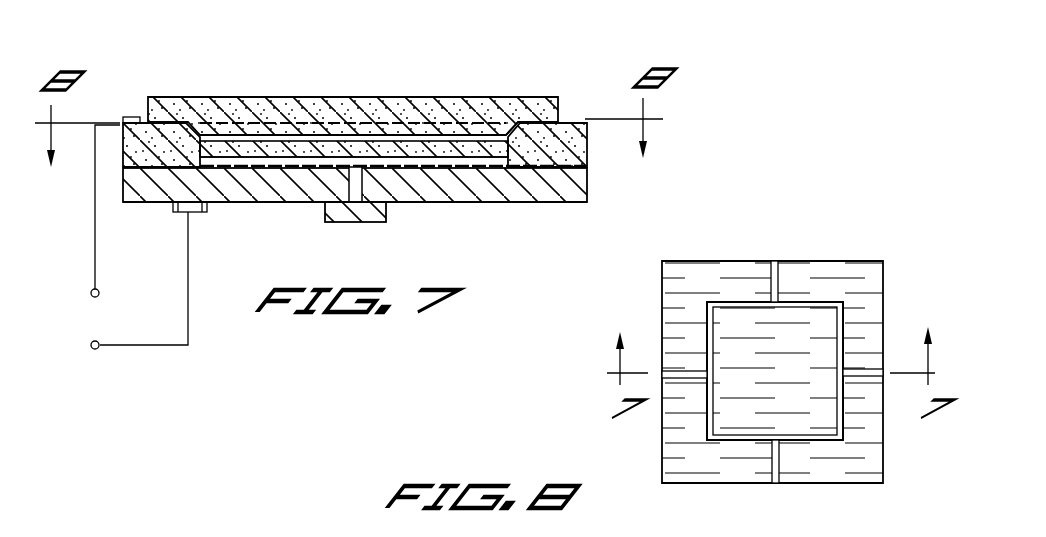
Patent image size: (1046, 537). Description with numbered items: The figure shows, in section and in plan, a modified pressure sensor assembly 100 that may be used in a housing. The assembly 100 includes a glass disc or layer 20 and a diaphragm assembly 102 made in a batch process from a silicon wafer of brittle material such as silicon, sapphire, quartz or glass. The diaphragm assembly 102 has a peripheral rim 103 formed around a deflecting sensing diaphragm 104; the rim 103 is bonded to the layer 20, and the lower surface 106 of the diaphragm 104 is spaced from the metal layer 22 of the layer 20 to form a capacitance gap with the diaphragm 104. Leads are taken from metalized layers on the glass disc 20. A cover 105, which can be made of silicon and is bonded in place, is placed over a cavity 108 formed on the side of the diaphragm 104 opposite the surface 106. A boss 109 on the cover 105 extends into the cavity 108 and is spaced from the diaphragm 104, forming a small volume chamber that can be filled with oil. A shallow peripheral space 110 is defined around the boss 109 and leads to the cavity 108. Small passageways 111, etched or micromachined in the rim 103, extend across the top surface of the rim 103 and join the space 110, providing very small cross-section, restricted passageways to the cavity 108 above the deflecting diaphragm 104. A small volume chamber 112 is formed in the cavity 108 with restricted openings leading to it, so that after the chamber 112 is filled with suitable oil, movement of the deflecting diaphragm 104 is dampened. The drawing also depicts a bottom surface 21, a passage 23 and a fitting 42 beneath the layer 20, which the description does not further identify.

In FIG. 7, the pressure sensor assembly 100 is at (147, 97).
In FIG. 7, the cover 105 is at (226, 97).
In FIG. 7, the diaphragm assembly 102 is at (588, 150).
In FIG. 8, the diaphragm assembly 102 is at (733, 275).
In FIG. 7, the peripheral rim 103 is at (565, 133).
In FIG. 8, the peripheral rim 103 is at (843, 273).
In FIG. 7, the deflecting sensing diaphragm 104 is at (427, 157).
In FIG. 8, the deflecting sensing diaphragm 104 is at (822, 345).
In FIG. 7, the cavity 108 is at (332, 135).
In FIG. 8, the cavity 108 is at (790, 418).
In FIG. 7, the boss 109 is at (383, 127).
In FIG. 7, the shallow peripheral space 110 is at (520, 123).
In FIG. 7, the passageways 111 is at (170, 121).
In FIG. 8, the passageways 111 is at (780, 272).
In FIG. 7, the small volume chamber 112 is at (398, 138).
In FIG. 7, the metal layer 22 is at (263, 165).
In FIG. 7, the glass disc 20 is at (523, 175).
In FIG. 7, the bottom surface of substrate 21 is at (568, 202).
In FIG. 7, the pressure passage 23 is at (355, 192).
In FIG. 7, the fitting block 42 is at (372, 222).
In FIG. 7, the lower surface 106 is at (448, 143).